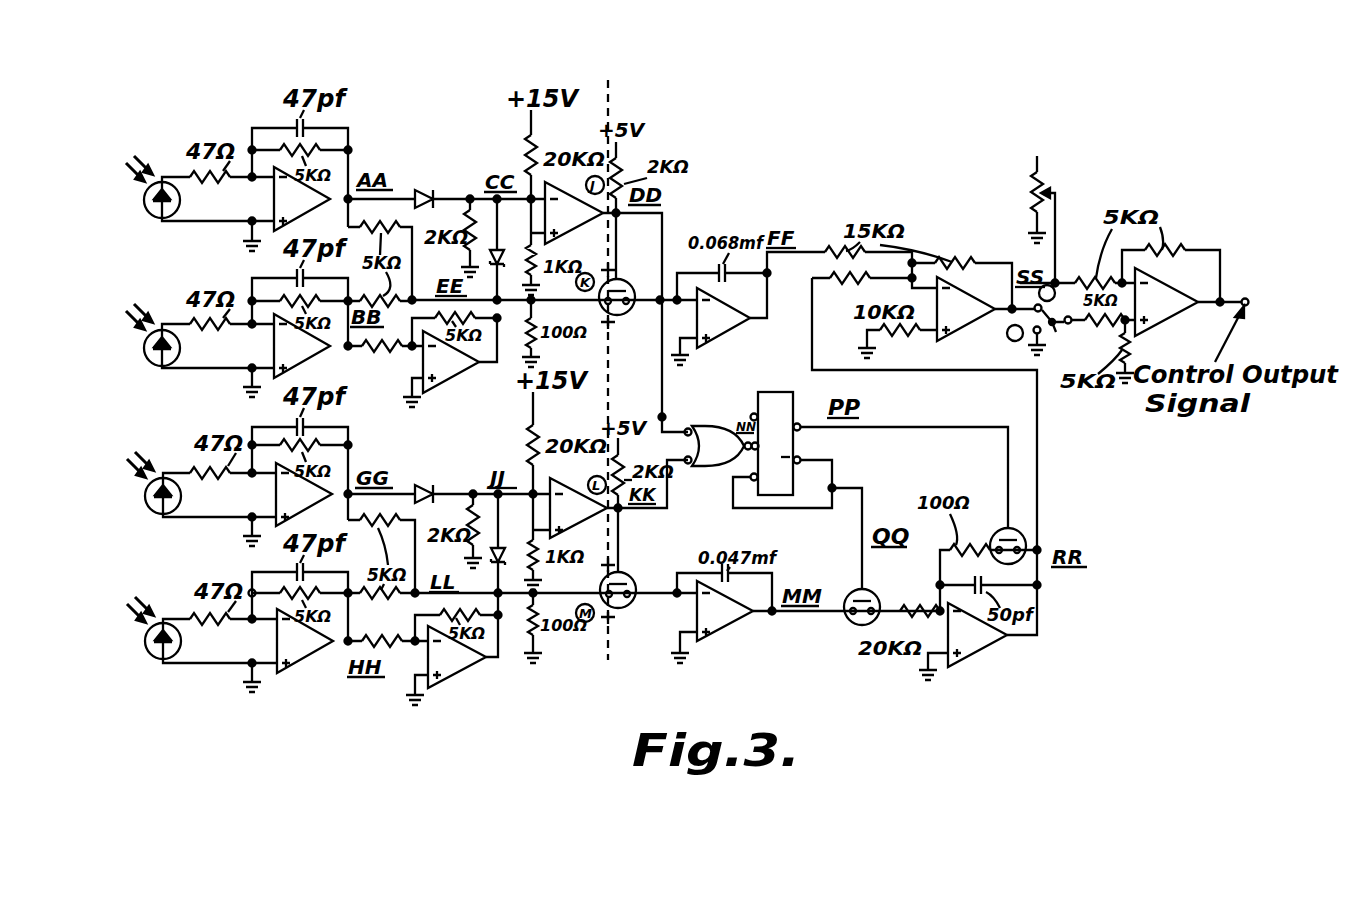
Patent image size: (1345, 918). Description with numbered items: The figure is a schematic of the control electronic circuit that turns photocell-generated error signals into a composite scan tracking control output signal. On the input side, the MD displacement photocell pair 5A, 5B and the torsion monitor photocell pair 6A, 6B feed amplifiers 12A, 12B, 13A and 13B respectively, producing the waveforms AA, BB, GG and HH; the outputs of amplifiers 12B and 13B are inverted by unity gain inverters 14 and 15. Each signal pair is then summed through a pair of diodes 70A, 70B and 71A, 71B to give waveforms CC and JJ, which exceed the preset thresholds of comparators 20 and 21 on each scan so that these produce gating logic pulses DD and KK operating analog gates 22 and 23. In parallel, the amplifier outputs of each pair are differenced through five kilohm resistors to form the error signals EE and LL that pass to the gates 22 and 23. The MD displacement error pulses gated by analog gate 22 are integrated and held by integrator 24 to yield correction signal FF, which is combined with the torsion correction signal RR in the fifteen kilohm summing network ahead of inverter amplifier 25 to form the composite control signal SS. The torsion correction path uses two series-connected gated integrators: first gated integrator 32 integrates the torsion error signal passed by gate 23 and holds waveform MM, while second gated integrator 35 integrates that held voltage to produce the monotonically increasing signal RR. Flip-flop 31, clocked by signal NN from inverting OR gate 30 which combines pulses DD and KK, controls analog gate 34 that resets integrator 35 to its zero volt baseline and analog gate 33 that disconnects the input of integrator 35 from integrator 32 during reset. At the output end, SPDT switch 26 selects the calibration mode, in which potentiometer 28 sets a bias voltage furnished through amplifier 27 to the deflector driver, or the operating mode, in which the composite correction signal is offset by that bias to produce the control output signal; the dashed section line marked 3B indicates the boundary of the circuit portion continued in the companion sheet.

The photocell 5A is at (150, 211).
The photocell 5B is at (158, 362).
The photocell 6A is at (160, 515).
The photocell 6B is at (161, 661).
The amplifier 12A is at (321, 212).
The amplifier 12B is at (321, 360).
The amplifier 13A is at (322, 509).
The amplifier 13B is at (323, 656).
The unity gain inverter 14 is at (460, 378).
The unity gain inverter 15 is at (466, 673).
The comparator 20 is at (595, 228).
The comparator 21 is at (595, 523).
The analog gate 22 is at (626, 288).
The analog gate 23 is at (630, 587).
The integrator 24 is at (732, 333).
The inverter amplifier 25 is at (979, 324).
The SPDT switch 26 is at (1060, 332).
The amplifier 27 is at (1183, 317).
The potentiometer 28 is at (1036, 196).
The inverting OR gate 30 is at (725, 457).
The flip-flop 31 is at (793, 447).
The first gated integrator 32 is at (733, 627).
The analog gate 33 is at (873, 602).
The analog gate 34 is at (1013, 527).
The second torsion monitor gated integrator 35 is at (986, 651).
The diode 70A is at (430, 189).
The diode 70B is at (503, 256).
The diode 71A is at (430, 484).
The diode 71B is at (505, 554).
The section line to FIG. 3B is at (660, 63).